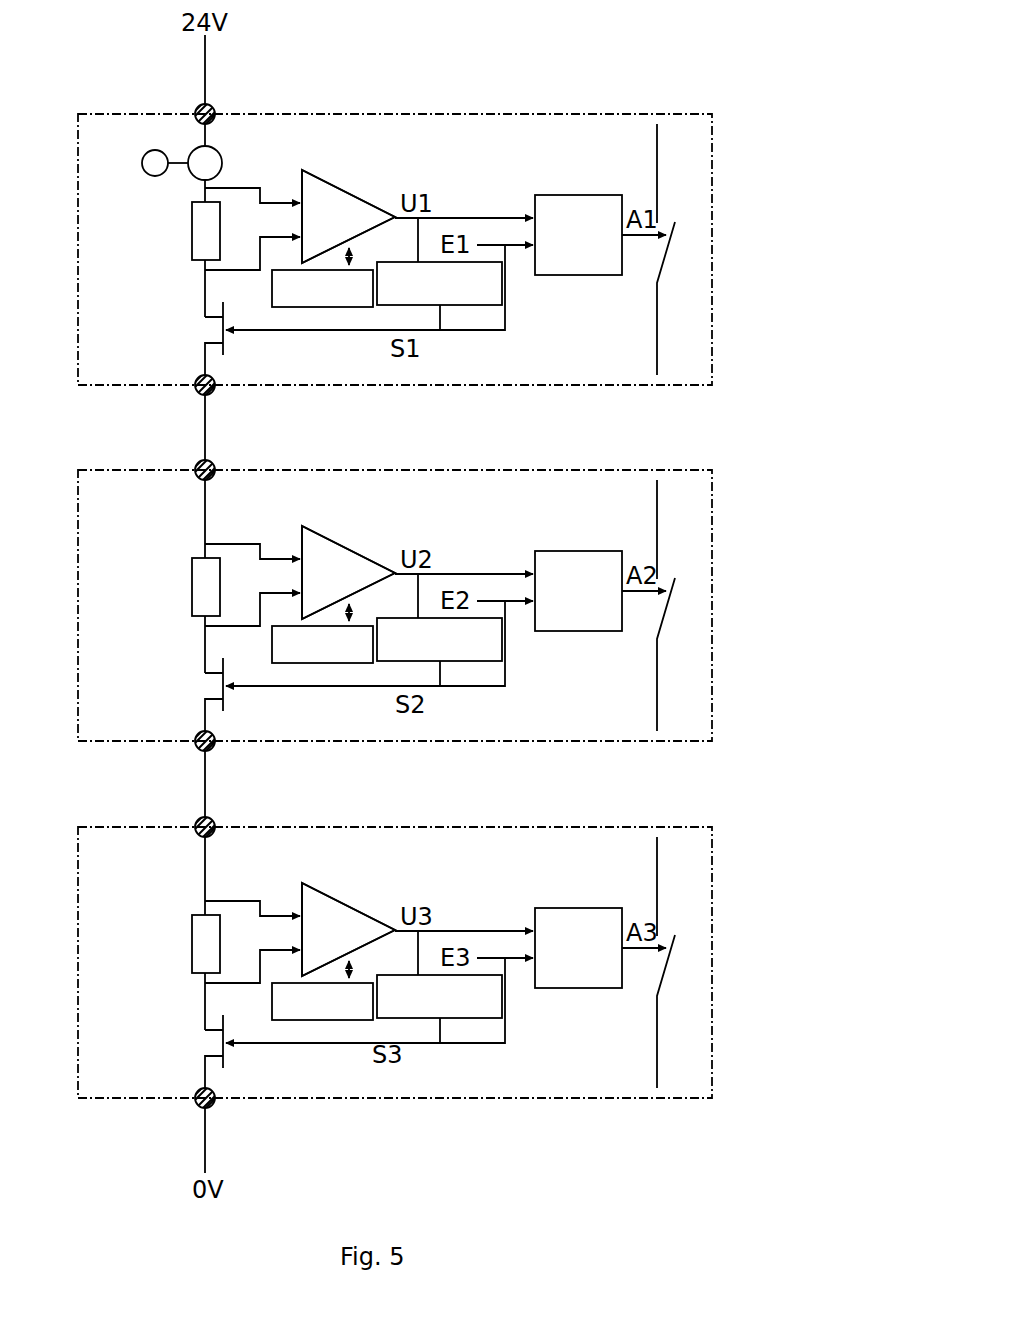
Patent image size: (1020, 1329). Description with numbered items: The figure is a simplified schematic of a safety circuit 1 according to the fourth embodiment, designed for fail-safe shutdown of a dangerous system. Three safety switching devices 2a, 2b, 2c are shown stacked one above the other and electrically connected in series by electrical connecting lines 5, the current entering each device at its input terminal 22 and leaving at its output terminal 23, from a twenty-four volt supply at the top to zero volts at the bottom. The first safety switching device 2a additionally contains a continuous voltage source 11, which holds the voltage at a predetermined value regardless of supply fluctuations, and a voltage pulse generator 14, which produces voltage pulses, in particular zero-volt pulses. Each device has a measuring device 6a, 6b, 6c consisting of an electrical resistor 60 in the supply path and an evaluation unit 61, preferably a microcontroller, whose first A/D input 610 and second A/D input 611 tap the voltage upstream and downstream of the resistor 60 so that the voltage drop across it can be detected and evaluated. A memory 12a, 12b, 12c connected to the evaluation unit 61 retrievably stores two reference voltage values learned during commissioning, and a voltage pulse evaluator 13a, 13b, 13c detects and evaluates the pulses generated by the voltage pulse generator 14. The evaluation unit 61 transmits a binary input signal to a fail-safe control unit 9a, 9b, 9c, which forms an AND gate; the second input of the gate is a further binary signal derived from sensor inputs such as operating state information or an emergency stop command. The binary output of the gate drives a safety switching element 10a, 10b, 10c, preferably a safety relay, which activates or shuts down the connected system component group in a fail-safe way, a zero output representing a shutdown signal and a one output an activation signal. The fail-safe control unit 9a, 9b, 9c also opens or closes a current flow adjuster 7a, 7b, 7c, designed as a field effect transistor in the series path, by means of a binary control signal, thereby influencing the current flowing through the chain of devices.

The safety circuit 1 is at (146, 1116).
The first safety switching device 2a is at (521, 112).
The second safety switching device 2b is at (395, 567).
The third safety switching device 2c is at (395, 924).
The electrical connecting line 5 is at (203, 408).
The measuring device of first safety switching device 6a is at (359, 190).
The measuring device of second safety switching device 6b is at (365, 549).
The measuring device of third safety switching device 6c is at (377, 908).
The current flow adjuster 7a is at (226, 340).
The current flow adjuster 7b is at (255, 700).
The current flow adjuster 7c is at (251, 1057).
The fail-safe control unit 9a is at (580, 276).
The fail-safe control unit 9b is at (578, 636).
The fail-safe control unit 9c is at (578, 993).
The safety switching element 10a is at (667, 256).
The safety switching element 10b is at (726, 605).
The safety switching element 10c is at (725, 962).
The continuous voltage source 11 is at (221, 157).
The memory 12a is at (343, 295).
The memory 12b is at (322, 681).
The memory 12c is at (322, 1037).
The voltage pulse evaluator 13a is at (463, 295).
The voltage pulse evaluator 13b is at (439, 677).
The voltage pulse evaluator 13c is at (439, 1033).
The voltage pulse generator 14 is at (157, 177).
The input terminal 22 is at (198, 107).
The output terminal 23 is at (213, 392).
The electrical resistor 60 is at (190, 248).
The evaluation unit 61 is at (331, 184).
The first A/D input 610 is at (301, 192).
The second A/D input 611 is at (299, 242).